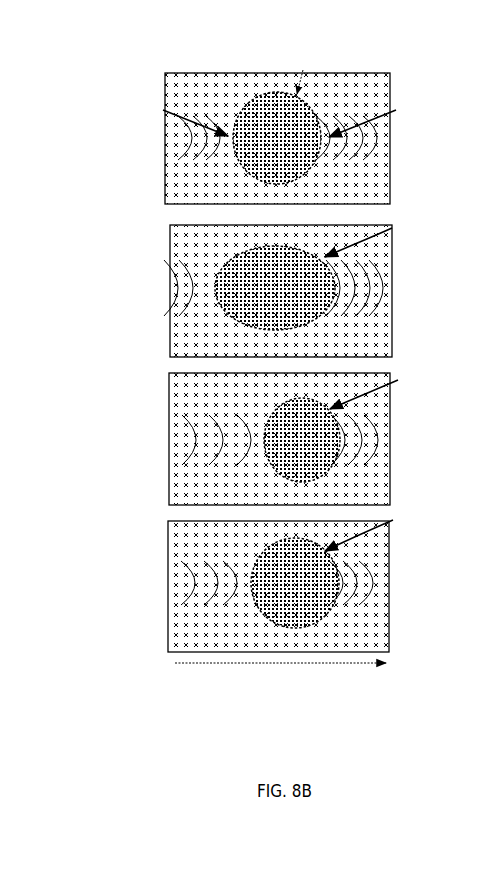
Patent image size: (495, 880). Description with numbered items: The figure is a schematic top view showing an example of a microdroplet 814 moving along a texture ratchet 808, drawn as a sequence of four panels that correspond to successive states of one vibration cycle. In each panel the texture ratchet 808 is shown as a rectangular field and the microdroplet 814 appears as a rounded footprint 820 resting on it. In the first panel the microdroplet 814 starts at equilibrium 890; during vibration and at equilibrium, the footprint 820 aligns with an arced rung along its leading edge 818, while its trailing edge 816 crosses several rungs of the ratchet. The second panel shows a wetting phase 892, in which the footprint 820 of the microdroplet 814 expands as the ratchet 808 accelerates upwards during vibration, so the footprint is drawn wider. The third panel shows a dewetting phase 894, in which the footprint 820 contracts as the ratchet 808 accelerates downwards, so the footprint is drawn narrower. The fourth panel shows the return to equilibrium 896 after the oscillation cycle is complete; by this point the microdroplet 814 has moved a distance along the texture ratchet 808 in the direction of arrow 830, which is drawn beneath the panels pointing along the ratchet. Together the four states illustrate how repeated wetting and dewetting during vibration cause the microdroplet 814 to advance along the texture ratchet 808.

The texture ratchet 808 is at (254, 362).
The microdroplet 814 is at (292, 148).
The trailing edge 816 is at (178, 116).
The leading edge 818 is at (377, 118).
The footprint 820 is at (359, 301).
The arrow 830 is at (295, 665).
The equilibrium 890 is at (205, 96).
The wetting phase 892 is at (203, 248).
The dewetting phase 894 is at (208, 400).
The equilibrium 896 is at (207, 548).